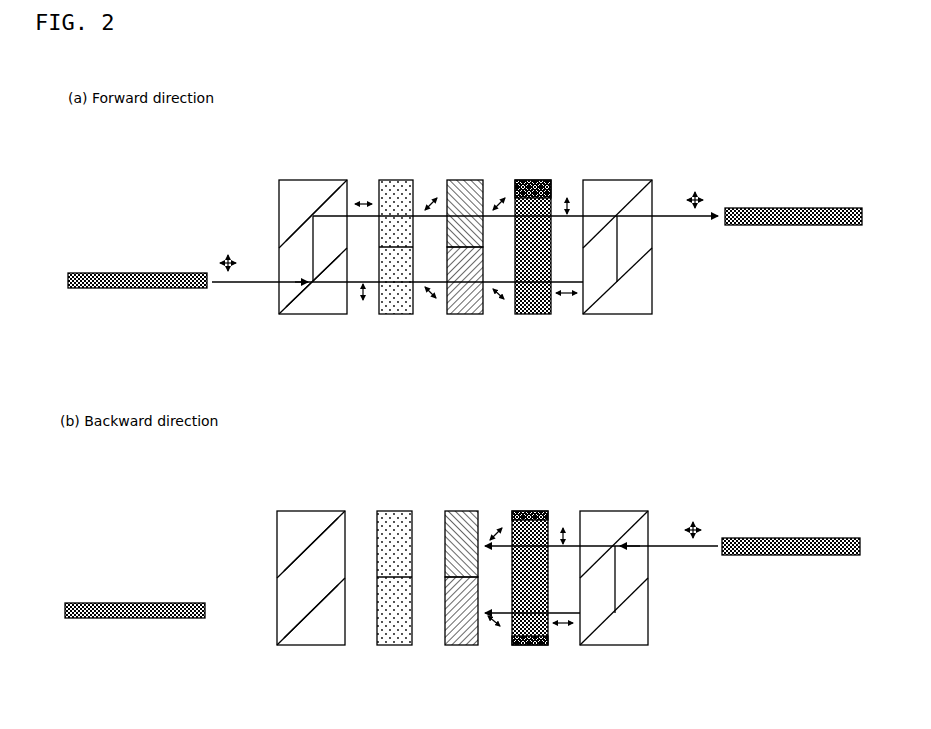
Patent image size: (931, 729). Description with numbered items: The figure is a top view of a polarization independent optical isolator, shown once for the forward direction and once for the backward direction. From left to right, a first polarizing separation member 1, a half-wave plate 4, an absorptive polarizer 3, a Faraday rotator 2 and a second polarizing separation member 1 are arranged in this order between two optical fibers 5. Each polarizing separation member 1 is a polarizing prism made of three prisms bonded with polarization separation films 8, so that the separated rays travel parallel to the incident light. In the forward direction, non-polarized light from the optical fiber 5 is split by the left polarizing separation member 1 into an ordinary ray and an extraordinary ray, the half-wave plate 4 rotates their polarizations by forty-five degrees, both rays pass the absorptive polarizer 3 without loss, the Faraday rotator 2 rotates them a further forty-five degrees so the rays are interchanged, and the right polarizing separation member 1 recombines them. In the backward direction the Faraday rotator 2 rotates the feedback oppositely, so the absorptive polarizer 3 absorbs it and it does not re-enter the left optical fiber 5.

The polarizing separation member 1 is at (292, 178).
The Faraday rotator 2 is at (526, 178).
The absorptive polarizer 3 is at (463, 178).
The half-wave plate 4 is at (395, 178).
The optical fiber 5 is at (102, 272).
The polarization separation film 8 is at (298, 230).